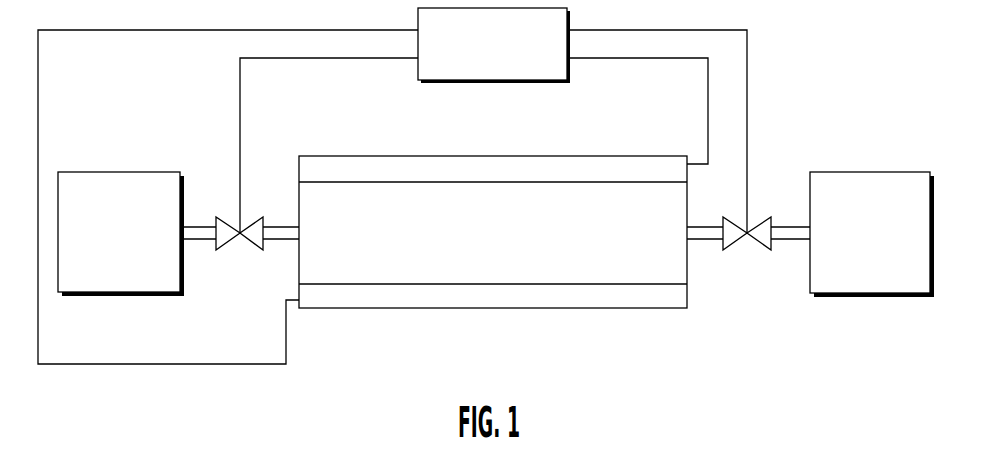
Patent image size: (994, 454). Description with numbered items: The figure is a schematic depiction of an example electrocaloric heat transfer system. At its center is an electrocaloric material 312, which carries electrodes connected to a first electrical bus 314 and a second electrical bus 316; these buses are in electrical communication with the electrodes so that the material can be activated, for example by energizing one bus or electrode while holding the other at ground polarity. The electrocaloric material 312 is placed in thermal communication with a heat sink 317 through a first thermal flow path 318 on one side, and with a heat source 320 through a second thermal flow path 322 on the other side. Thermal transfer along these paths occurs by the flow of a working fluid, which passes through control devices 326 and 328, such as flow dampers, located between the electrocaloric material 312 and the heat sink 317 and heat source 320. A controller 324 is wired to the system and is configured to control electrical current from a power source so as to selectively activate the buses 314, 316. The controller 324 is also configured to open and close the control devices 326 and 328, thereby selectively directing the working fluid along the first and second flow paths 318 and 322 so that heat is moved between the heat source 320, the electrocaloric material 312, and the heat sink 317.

The electrocaloric material 312 is at (493, 232).
The first electrical bus 314 is at (400, 167).
The second electrical bus 316 is at (612, 296).
The heat sink 317 is at (885, 247).
The first thermal flow path 318 is at (778, 226).
The heat source 320 is at (134, 246).
The second thermal flow path 322 is at (208, 225).
The controller 324 is at (506, 59).
The control device 326 is at (735, 237).
The control device 328 is at (253, 237).